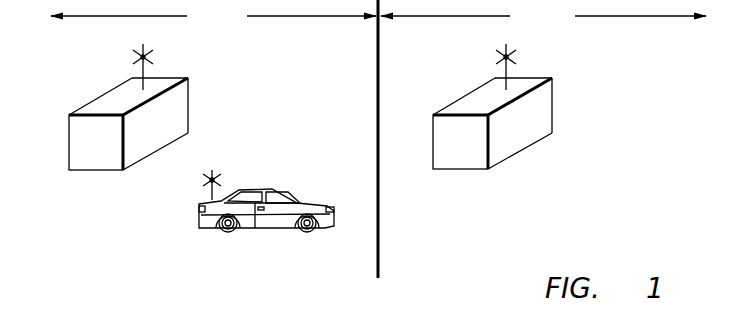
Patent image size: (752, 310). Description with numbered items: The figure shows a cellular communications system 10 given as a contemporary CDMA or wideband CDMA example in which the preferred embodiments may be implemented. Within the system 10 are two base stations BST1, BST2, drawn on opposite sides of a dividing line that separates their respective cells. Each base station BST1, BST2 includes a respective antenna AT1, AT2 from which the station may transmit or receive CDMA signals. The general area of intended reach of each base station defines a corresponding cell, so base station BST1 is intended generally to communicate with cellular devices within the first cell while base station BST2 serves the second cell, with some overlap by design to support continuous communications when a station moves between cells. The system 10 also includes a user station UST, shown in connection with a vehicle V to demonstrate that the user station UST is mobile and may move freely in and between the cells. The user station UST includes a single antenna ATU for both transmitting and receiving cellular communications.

The cellular communications system 10 is at (557, 230).
The base station BST1 is at (128, 124).
The base station BST2 is at (492, 123).
The antenna AT1 is at (141, 75).
The antenna AT2 is at (504, 75).
The antenna ATU is at (210, 196).
The user station UST is at (272, 222).
The vehicle V is at (266, 216).